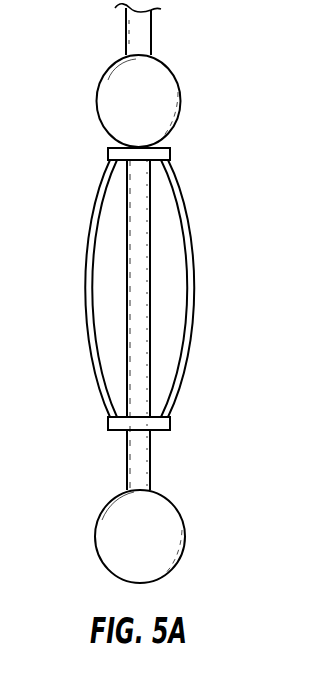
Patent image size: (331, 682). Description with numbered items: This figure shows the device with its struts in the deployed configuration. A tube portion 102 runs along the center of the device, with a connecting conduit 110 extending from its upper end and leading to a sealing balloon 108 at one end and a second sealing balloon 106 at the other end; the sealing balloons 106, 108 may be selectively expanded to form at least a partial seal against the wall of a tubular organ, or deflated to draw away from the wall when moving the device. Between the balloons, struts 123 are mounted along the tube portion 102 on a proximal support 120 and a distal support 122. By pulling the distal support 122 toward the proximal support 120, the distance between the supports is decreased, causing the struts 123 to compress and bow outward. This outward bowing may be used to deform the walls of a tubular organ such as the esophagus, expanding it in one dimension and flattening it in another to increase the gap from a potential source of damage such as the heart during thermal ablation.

The tube portion 102 is at (150, 350).
The sealing balloon 106 is at (95, 535).
The sealing balloon 108 is at (180, 98).
The connecting conduit 110 is at (152, 32).
The proximal support 120 is at (170, 154).
The distal support 122 is at (170, 425).
The struts 123 is at (85, 293).